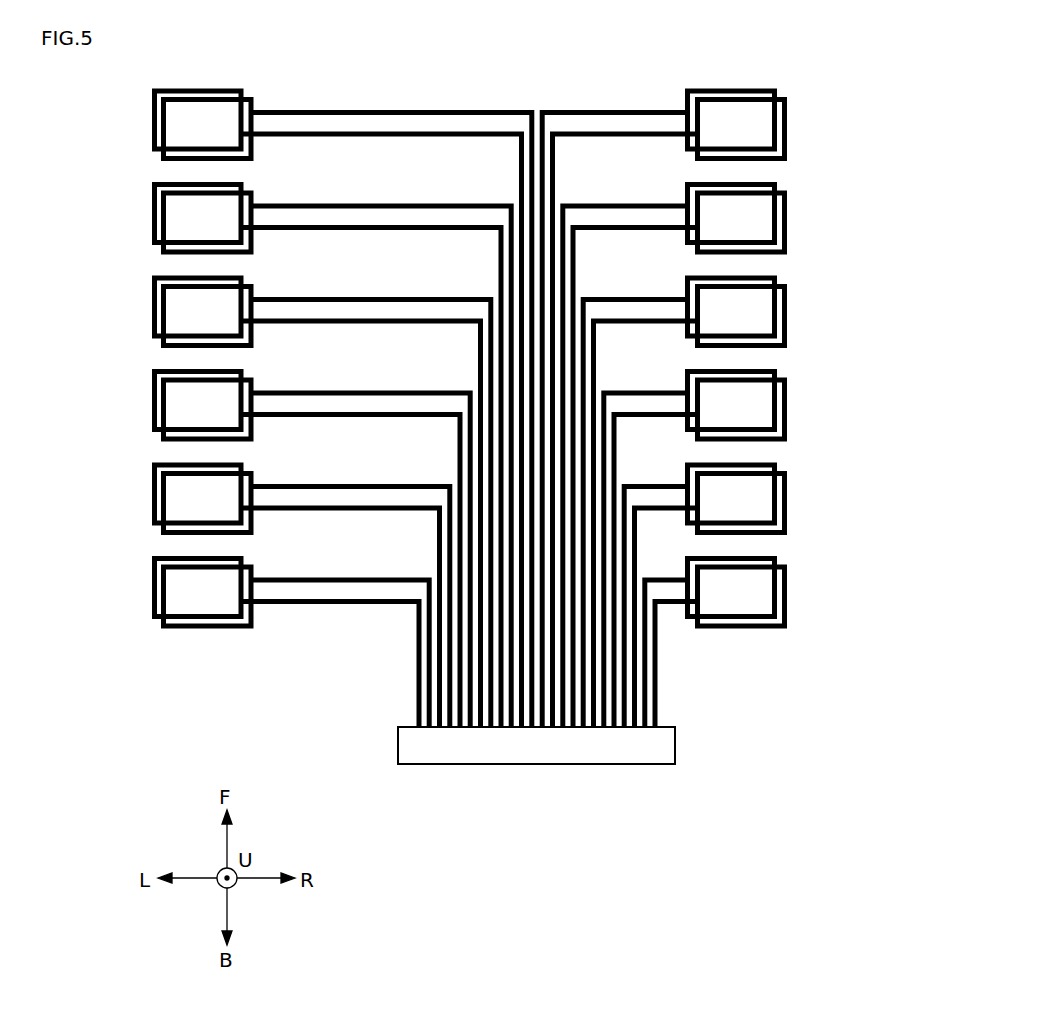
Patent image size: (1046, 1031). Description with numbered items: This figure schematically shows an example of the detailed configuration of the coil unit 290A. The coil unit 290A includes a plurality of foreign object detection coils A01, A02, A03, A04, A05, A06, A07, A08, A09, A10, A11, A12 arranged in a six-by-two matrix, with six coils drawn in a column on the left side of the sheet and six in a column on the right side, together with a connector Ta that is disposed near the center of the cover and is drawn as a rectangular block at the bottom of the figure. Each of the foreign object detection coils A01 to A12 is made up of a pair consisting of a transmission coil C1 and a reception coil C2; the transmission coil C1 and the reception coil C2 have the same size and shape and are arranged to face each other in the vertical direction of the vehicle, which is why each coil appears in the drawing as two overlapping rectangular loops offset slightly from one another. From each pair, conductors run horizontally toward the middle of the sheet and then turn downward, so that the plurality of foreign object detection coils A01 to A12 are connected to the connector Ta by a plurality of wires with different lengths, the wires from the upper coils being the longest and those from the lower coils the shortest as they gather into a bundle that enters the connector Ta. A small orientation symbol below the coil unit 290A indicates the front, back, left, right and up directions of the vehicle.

The coil unit 290A is at (490, 59).
The connector Ta is at (672, 749).
The transmission coil C1 is at (168, 88).
The reception coil C2 is at (254, 97).
The foreign object detection coil A01 is at (133, 112).
The foreign object detection coil A02 is at (133, 205).
The foreign object detection coil A03 is at (133, 299).
The foreign object detection coil A04 is at (133, 392).
The foreign object detection coil A05 is at (133, 486).
The foreign object detection coil A06 is at (133, 579).
The foreign object detection coil A07 is at (806, 132).
The foreign object detection coil A08 is at (806, 226).
The foreign object detection coil A09 is at (806, 319).
The foreign object detection coil A10 is at (806, 413).
The foreign object detection coil A11 is at (806, 506).
The foreign object detection coil A12 is at (806, 600).